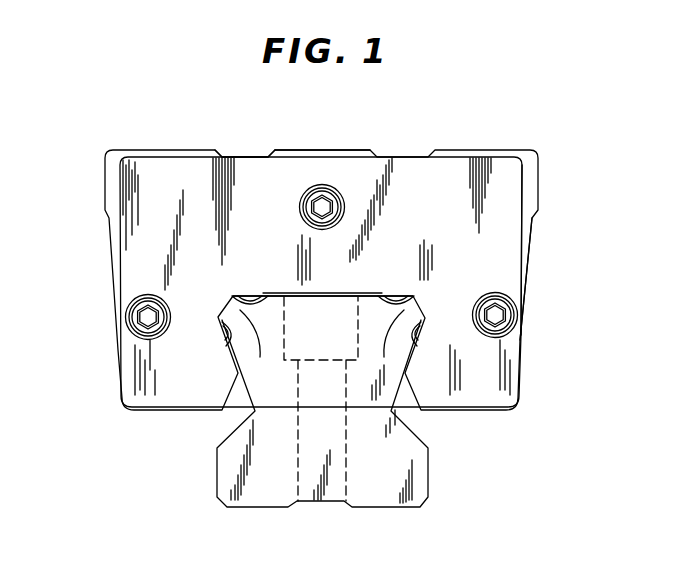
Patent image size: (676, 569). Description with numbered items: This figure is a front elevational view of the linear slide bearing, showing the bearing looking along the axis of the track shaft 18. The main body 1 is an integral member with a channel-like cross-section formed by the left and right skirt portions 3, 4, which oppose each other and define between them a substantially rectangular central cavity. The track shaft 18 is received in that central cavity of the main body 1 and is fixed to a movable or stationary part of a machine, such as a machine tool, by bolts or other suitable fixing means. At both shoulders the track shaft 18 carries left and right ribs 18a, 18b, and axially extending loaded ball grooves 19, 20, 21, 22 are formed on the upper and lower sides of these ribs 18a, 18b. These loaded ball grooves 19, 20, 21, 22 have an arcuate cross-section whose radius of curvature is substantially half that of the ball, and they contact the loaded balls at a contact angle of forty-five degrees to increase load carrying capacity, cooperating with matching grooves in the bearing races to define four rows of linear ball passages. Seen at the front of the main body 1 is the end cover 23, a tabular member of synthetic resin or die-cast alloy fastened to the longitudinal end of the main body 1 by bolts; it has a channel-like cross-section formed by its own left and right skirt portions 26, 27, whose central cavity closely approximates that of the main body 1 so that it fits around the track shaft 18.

The main body 1 is at (378, 142).
The left skirt portion 3 is at (306, 280).
The right skirt portion 4 is at (527, 237).
The track shaft 18 is at (345, 402).
The left rib 18a is at (260, 348).
The right rib 18b is at (379, 348).
The loaded ball groove 19 is at (258, 298).
The loaded ball groove 20 is at (232, 348).
The loaded ball groove 21 is at (388, 298).
The loaded ball groove 22 is at (411, 348).
The end cover 23 is at (511, 200).
The left skirt portion of end cover 26 is at (133, 270).
The right skirt portion of end cover 27 is at (503, 277).